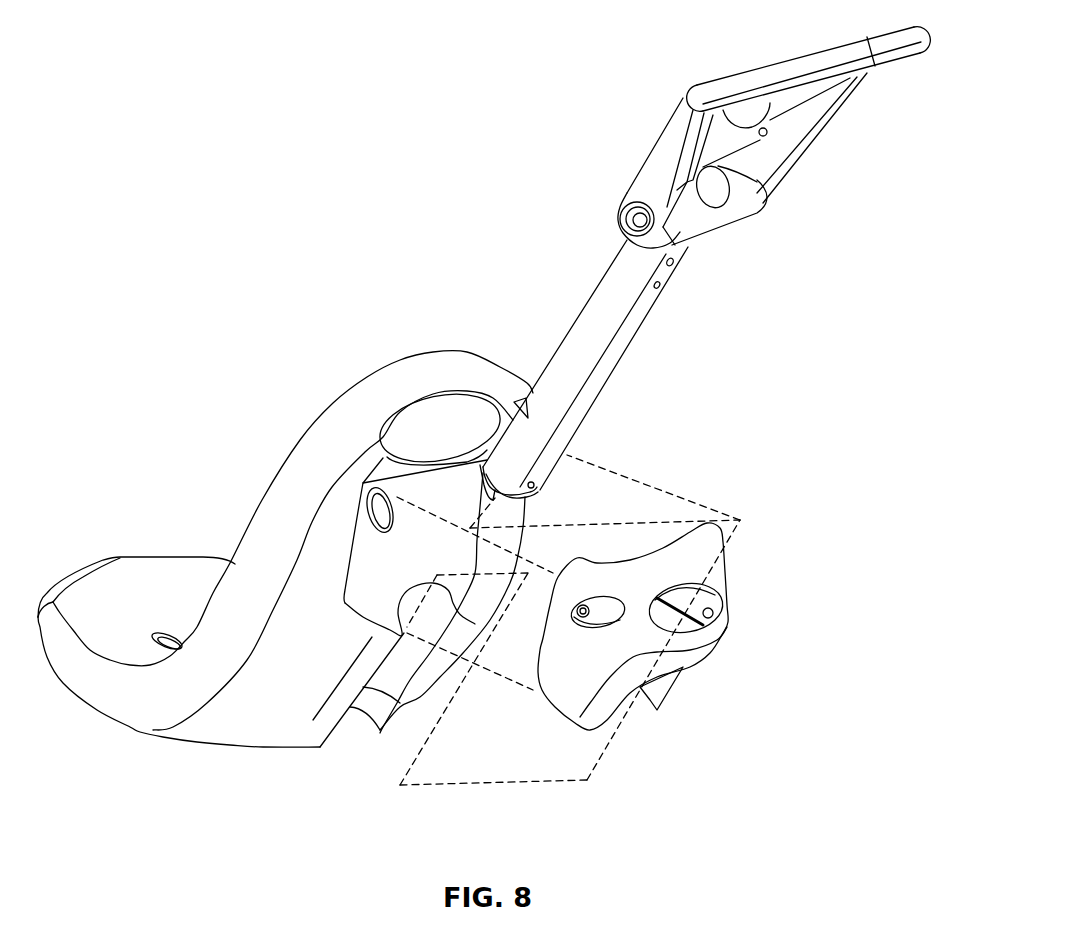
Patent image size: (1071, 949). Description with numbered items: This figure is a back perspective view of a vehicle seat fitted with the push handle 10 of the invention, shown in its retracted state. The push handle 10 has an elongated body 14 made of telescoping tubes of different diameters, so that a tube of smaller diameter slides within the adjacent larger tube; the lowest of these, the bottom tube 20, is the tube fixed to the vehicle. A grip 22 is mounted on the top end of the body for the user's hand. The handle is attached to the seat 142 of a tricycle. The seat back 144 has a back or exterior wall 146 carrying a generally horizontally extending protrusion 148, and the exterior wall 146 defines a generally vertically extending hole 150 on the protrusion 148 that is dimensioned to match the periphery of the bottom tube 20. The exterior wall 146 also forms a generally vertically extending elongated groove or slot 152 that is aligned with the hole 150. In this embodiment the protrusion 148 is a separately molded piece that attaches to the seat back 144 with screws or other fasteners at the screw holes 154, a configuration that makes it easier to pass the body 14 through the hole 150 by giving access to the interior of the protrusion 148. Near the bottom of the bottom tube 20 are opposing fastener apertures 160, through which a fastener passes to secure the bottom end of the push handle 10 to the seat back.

The push handle 10 is at (511, 283).
The elongated body 14 is at (630, 327).
The bottom tube 20 is at (560, 413).
The grip 22 is at (752, 64).
The seat 142 is at (198, 735).
The seat back 144 is at (372, 388).
The exterior wall 146 is at (295, 742).
The protrusion 148 is at (688, 657).
The hole 150 is at (723, 612).
The slot 152 is at (428, 718).
The screw holes 154 is at (613, 597).
The fastener apertures 160 is at (537, 485).